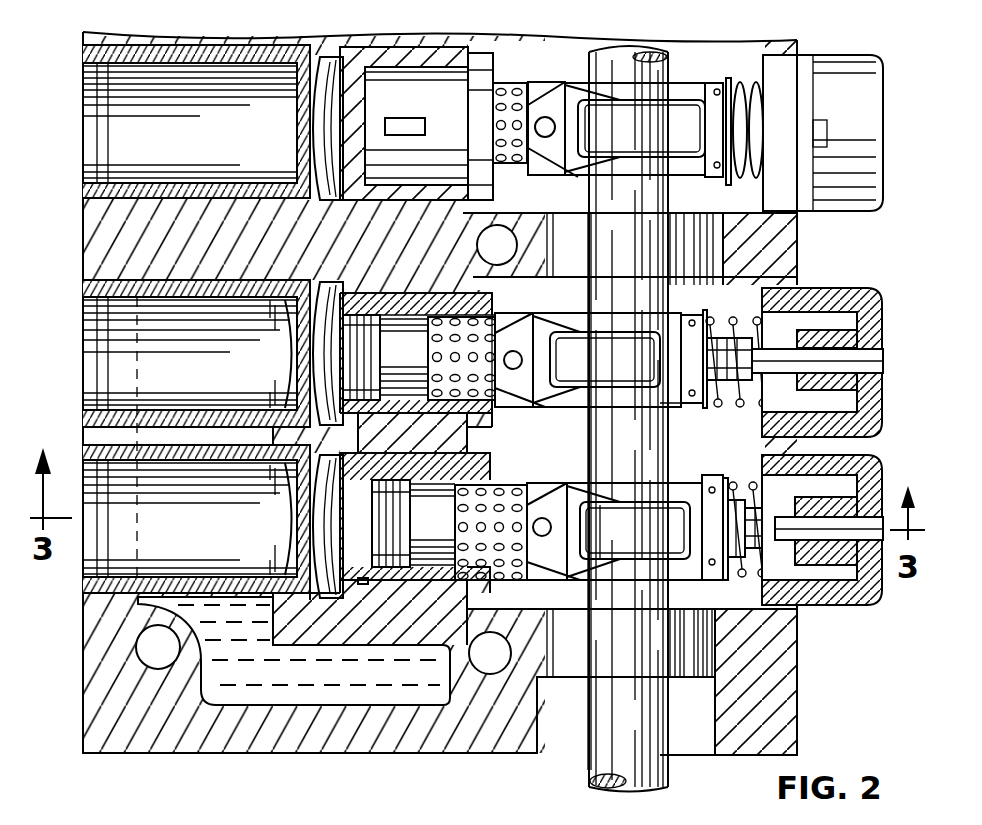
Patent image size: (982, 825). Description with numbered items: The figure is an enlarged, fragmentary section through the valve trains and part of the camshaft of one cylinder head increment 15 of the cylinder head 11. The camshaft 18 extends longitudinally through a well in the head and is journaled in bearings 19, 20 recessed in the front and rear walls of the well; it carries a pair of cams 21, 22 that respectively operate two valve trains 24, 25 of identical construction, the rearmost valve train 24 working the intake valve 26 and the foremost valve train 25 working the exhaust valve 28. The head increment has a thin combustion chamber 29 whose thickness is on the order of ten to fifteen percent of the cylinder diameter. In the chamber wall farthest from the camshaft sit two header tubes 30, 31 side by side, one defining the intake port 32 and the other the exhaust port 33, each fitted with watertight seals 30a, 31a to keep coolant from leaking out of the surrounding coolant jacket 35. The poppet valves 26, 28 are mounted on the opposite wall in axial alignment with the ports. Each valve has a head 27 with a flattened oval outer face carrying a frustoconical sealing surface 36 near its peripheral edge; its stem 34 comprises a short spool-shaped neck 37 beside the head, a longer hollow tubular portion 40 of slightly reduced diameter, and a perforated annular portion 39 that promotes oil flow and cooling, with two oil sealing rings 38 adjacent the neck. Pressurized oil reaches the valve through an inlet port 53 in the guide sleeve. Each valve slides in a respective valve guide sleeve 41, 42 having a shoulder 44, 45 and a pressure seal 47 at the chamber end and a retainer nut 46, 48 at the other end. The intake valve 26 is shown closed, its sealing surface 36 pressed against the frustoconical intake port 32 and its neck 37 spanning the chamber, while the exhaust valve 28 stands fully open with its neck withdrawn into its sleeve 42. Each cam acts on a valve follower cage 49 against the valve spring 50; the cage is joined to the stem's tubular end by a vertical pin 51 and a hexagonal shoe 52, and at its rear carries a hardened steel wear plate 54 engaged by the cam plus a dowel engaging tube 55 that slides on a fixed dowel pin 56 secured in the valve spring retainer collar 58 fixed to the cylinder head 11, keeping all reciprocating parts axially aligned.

The cylinder head 11 is at (312, 758).
The cylinder head increment 15 is at (797, 720).
The camshaft 18 is at (600, 786).
The bearing 19 is at (700, 662).
The bearing 20 is at (700, 245).
The cam 21 is at (600, 538).
The cam 22 is at (684, 405).
The valve train 24 is at (831, 285).
The valve train 25 is at (845, 606).
The intake valve 26 is at (278, 366).
The valve head 27 is at (277, 344).
The exhaust valve 28 is at (304, 525).
The combustion chamber 29 is at (345, 285).
The header tube 30 is at (118, 275).
The watertight seal 30a is at (115, 283).
The header tube 31 is at (115, 198).
The watertight seal 31a is at (272, 300).
The intake port 32 is at (279, 398).
The exhaust port 33 is at (287, 477).
The valve stem 34 is at (493, 310).
The coolant jacket 35 is at (248, 690).
The frustoconical sealing surface 36 is at (327, 60).
The neck 37 is at (328, 290).
The oil sealing ring 38 is at (366, 352).
The annular portion 39 is at (446, 322).
The tubular portion 40 is at (385, 316).
The valve guide sleeve 41 is at (392, 290).
The valve guide sleeve 42 is at (392, 72).
The shoulder 44 is at (372, 270).
The shoulder 45 is at (358, 588).
The retainer nut 46 is at (494, 429).
The pressure seal 47 is at (396, 424).
The retainer nut 48 is at (483, 68).
The valve follower cage 49 is at (683, 82).
The valve spring 50 is at (742, 80).
The vertical pin 51 is at (523, 358).
The hexagonal shoe 52 is at (533, 318).
The inlet port 53 is at (388, 124).
The wear plate 54 is at (713, 82).
The dowel engaging tube 55 is at (744, 338).
The dowel pin 56 is at (868, 360).
The valve spring retainer collar 58 is at (882, 76).